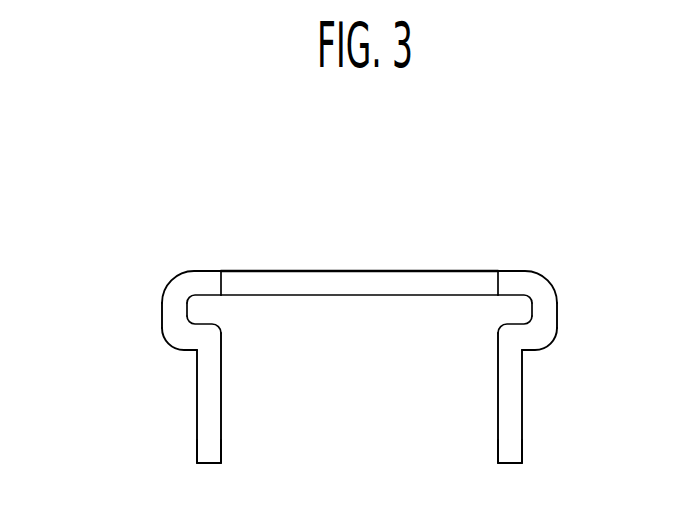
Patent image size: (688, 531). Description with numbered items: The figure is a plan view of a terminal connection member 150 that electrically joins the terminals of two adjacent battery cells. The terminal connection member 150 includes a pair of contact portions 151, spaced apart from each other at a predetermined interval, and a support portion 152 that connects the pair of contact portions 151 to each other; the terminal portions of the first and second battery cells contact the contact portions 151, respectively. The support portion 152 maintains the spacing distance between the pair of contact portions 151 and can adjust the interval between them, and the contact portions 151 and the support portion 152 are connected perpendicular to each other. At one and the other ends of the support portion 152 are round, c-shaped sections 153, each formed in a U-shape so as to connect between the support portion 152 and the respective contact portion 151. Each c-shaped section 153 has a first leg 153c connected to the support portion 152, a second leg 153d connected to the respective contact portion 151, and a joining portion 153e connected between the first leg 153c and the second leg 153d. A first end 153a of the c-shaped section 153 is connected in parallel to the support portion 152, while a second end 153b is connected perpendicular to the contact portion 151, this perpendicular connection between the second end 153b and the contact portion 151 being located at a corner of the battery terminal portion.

The terminal connection member 150 is at (284, 207).
The contact portion 151 is at (513, 448).
The support portion 152 is at (364, 278).
The c-shaped section 153 is at (70, 242).
The first end 153a is at (222, 282).
The second end 153b is at (205, 339).
The first leg 153c is at (203, 273).
The second leg 153d is at (197, 359).
The joining portion 153e is at (165, 312).